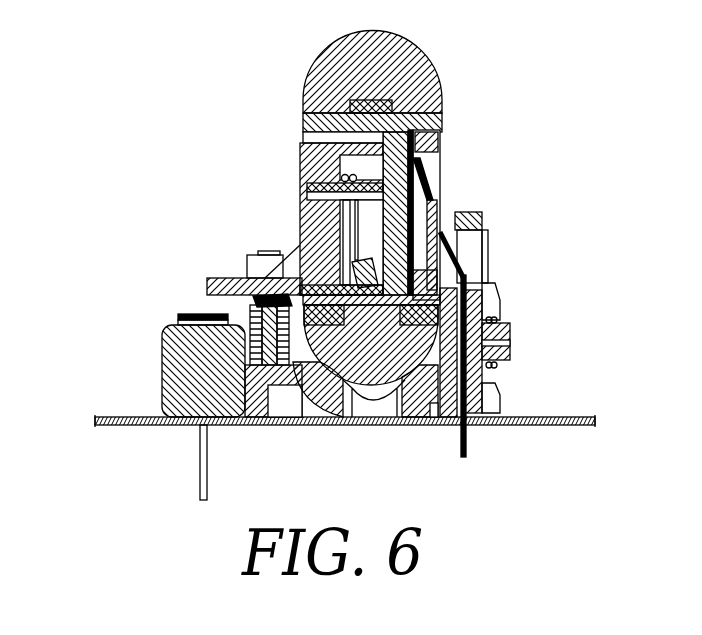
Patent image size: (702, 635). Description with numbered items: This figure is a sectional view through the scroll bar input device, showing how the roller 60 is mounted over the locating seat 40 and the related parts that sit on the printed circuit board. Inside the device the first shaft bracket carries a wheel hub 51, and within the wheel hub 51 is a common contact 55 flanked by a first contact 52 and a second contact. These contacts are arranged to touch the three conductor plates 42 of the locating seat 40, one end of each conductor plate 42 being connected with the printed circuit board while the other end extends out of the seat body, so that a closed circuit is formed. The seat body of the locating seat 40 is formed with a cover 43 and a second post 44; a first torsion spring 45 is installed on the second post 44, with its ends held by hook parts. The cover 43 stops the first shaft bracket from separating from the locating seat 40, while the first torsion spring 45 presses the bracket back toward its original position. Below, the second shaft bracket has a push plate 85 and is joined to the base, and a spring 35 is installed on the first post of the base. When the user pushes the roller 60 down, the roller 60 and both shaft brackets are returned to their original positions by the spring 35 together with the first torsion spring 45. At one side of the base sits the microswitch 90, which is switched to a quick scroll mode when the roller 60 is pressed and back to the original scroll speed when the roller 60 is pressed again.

The roller 60 is at (390, 50).
The wheel hub 51 is at (436, 144).
The first contact 52 is at (427, 175).
The common contact 55 is at (440, 192).
The locating seat 40 is at (512, 319).
The cover 43 is at (483, 218).
The conductor plate 42 is at (466, 268).
The second post 44 is at (508, 325).
The first torsion spring 45 is at (490, 367).
The push plate 85 is at (232, 283).
The microswitch 90 is at (163, 348).
The spring 35 is at (286, 296).